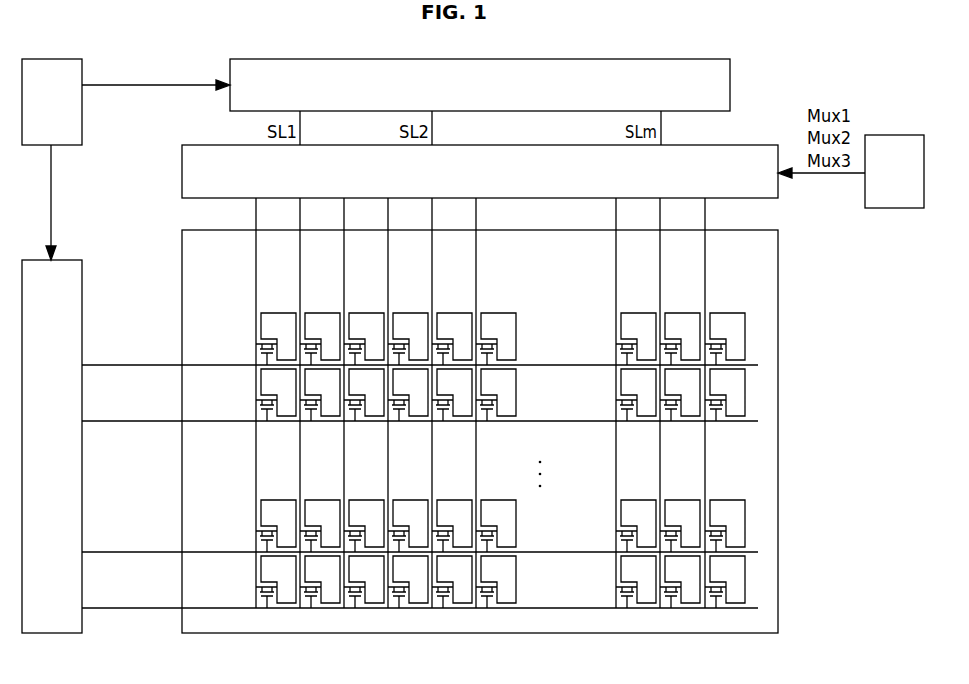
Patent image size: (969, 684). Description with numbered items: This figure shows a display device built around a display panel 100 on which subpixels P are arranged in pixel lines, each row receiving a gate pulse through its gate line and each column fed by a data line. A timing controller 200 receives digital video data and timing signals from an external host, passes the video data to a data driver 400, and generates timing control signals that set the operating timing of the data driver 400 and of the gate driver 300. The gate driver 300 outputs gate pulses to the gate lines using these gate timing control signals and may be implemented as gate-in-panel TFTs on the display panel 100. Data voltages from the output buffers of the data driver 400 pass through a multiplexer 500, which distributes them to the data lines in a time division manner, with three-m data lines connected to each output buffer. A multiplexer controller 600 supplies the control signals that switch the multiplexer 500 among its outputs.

The display panel 100 is at (468, 415).
The timing controller 200 is at (37, 114).
The gate driver 300 is at (37, 442).
The data driver 400 is at (463, 95).
The multiplexer 500 is at (463, 183).
The multiplexer controller 600 is at (880, 181).
The subpixel P is at (745, 330).